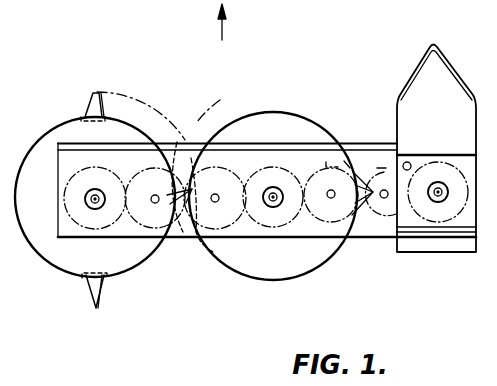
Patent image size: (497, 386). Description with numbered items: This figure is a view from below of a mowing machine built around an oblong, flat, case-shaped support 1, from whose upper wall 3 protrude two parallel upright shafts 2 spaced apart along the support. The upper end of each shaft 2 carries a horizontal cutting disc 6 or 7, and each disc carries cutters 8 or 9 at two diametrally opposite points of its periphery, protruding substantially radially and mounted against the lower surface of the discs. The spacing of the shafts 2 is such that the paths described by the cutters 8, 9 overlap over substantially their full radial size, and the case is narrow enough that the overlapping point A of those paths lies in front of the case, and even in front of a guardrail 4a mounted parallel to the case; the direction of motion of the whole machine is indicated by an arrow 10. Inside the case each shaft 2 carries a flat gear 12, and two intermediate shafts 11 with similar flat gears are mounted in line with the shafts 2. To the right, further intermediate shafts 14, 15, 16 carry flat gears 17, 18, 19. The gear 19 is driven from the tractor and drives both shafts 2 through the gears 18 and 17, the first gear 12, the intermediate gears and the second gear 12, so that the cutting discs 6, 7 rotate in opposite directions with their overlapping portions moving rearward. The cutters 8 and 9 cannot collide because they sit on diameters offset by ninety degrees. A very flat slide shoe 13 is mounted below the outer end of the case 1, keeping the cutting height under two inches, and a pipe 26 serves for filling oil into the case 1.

The case-shaped support 1 is at (185, 240).
The upright shafts 2 is at (97, 205).
The upper wall 3 is at (350, 238).
The guardrail 4a is at (360, 143).
The cutting disc 6 is at (46, 134).
The cutting disc 7 is at (293, 113).
The cutters 8 is at (88, 100).
The cutters 9 is at (372, 197).
The arrow 10 is at (225, 37).
The intermediate shafts 11 is at (154, 203).
The flat gear 12 is at (76, 226).
The slide shoe 13 is at (420, 63).
The intermediate shaft 14 is at (331, 199).
The intermediate shaft 15 is at (384, 199).
The intermediate shaft 16 is at (438, 202).
The flat gear 17 is at (326, 162).
The flat gear 18 is at (381, 168).
The flat gear 19 is at (458, 213).
The pipe 26 is at (408, 162).
The overlapping point A is at (184, 140).